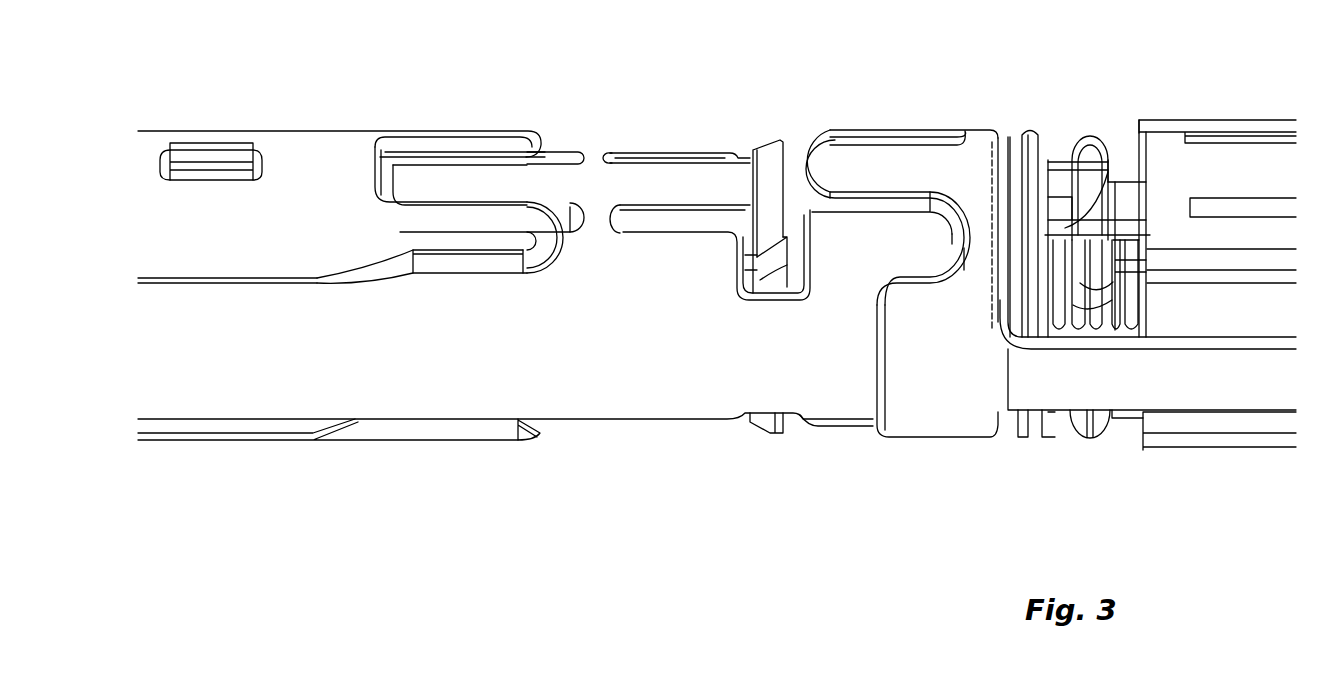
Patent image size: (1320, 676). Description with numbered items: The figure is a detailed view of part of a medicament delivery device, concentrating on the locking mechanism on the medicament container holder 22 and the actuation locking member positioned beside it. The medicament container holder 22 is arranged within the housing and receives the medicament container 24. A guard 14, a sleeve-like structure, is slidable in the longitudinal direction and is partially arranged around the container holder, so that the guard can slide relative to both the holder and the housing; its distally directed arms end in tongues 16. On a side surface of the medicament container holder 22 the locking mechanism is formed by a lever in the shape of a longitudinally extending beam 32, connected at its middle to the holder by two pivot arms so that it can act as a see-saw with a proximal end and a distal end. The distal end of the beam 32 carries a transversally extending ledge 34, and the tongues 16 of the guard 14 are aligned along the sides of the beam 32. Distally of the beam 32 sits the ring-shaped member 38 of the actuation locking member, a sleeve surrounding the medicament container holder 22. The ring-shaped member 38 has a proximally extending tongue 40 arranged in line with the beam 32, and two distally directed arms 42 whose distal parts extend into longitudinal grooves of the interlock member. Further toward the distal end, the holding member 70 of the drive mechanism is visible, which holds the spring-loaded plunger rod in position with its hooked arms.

The guard 14 is at (188, 237).
The tongues 16 is at (438, 235).
The medicament container holder 22 is at (612, 356).
The medicament container 24 is at (1092, 165).
The beam 32 is at (596, 152).
The transversally extending ledge 34 is at (765, 155).
The ring-shaped member 38 is at (928, 391).
The proximally extending tongue 40 is at (862, 163).
The distally directed arms 42 is at (1083, 391).
The holding member 70 is at (1203, 167).